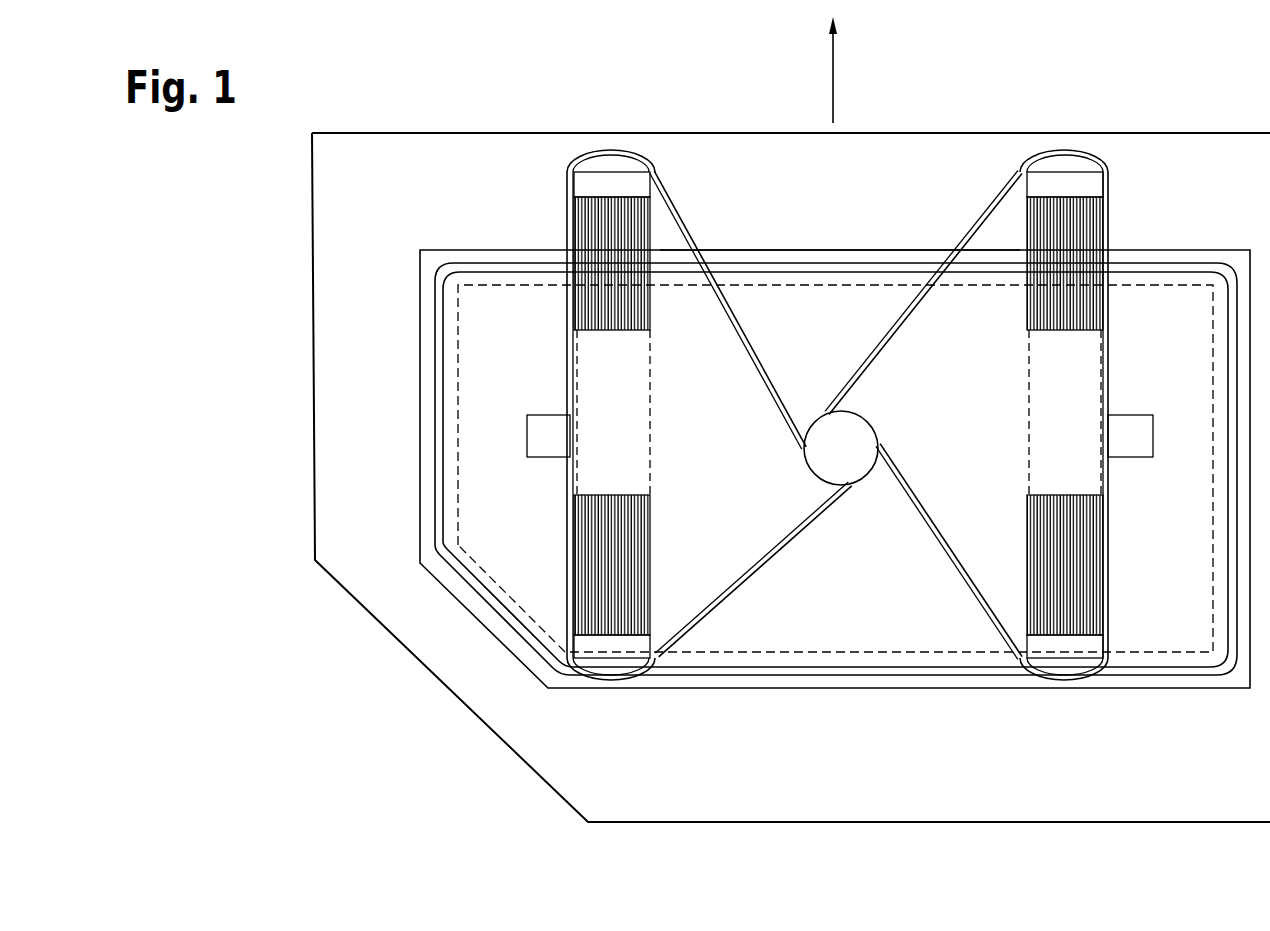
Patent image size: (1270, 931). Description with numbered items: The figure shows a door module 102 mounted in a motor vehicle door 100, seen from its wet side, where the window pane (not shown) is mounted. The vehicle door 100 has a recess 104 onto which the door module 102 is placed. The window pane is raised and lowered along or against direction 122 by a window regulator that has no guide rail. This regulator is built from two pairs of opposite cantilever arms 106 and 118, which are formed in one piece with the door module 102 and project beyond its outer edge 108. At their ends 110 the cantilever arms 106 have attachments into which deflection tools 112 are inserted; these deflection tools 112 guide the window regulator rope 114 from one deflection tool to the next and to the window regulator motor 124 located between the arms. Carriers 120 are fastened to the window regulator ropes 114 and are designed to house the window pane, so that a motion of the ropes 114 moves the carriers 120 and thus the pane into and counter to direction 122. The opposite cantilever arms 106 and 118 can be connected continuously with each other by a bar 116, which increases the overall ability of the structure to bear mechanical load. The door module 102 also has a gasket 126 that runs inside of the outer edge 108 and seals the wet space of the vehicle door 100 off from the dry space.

The motor vehicle door 100 is at (302, 254).
The door module 102 is at (412, 356).
The recess 104 is at (458, 398).
The cantilever arm 106 is at (588, 300).
The outer edge 108 is at (836, 249).
The end 110 is at (600, 200).
The deflection tool 112 is at (615, 163).
The window regulator rope 114 is at (866, 353).
The bar 116 is at (652, 420).
The cantilever arm 118 is at (590, 505).
The carrier 120 is at (536, 455).
The direction 122 is at (835, 92).
The window regulator motor 124 is at (855, 425).
The gasket 126 is at (440, 515).